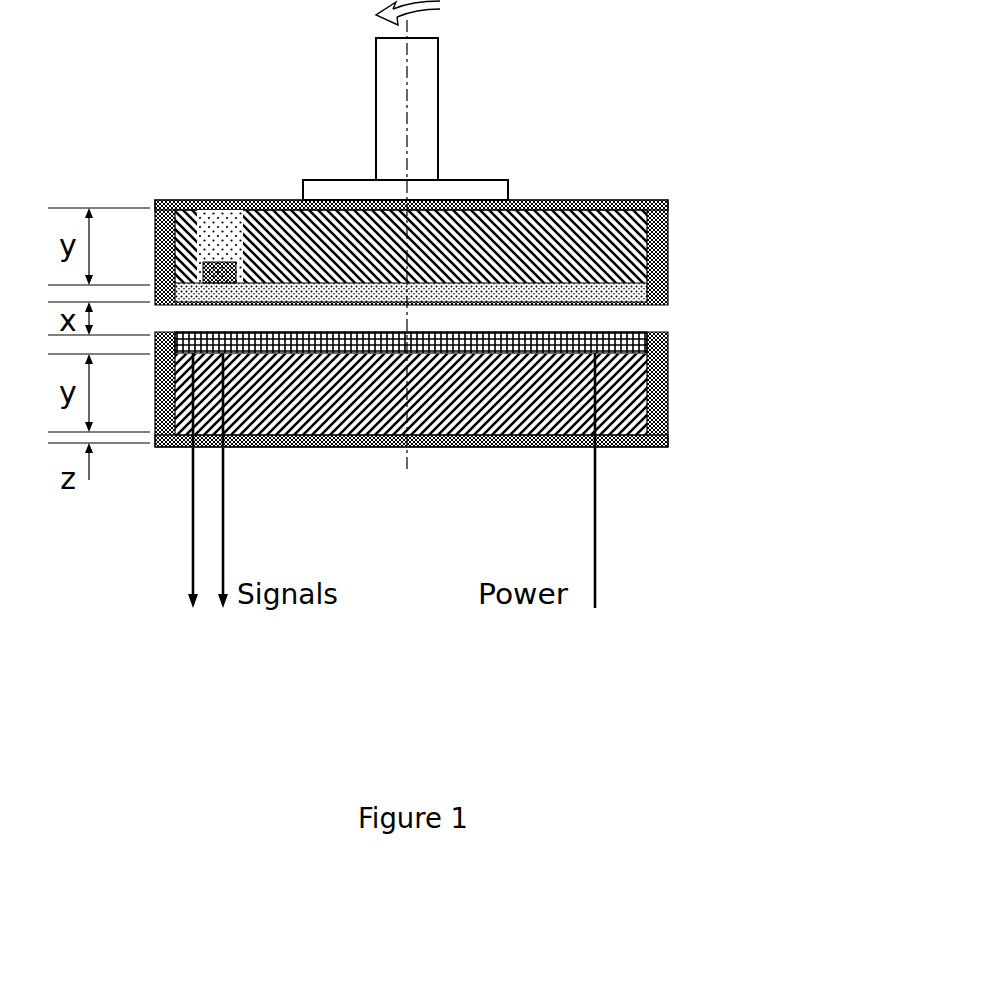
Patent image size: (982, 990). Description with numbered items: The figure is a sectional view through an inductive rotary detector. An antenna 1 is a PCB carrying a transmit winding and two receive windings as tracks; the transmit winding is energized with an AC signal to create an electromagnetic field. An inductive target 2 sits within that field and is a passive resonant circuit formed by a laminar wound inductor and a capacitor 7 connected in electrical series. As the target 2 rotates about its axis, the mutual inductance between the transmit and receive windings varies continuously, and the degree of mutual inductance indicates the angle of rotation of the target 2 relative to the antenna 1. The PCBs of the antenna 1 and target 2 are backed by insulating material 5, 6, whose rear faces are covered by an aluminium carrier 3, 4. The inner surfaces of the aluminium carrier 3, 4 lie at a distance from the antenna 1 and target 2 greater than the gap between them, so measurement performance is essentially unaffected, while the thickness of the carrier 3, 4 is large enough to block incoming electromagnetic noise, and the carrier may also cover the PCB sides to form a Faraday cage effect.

The antenna 1 is at (665, 335).
The inductive target 2 is at (590, 293).
The aluminium carrier 3 is at (655, 448).
The aluminium carrier 4 is at (570, 203).
The insulating material 5 is at (668, 232).
The insulating material 6 is at (668, 386).
The capacitor 7 is at (155, 200).